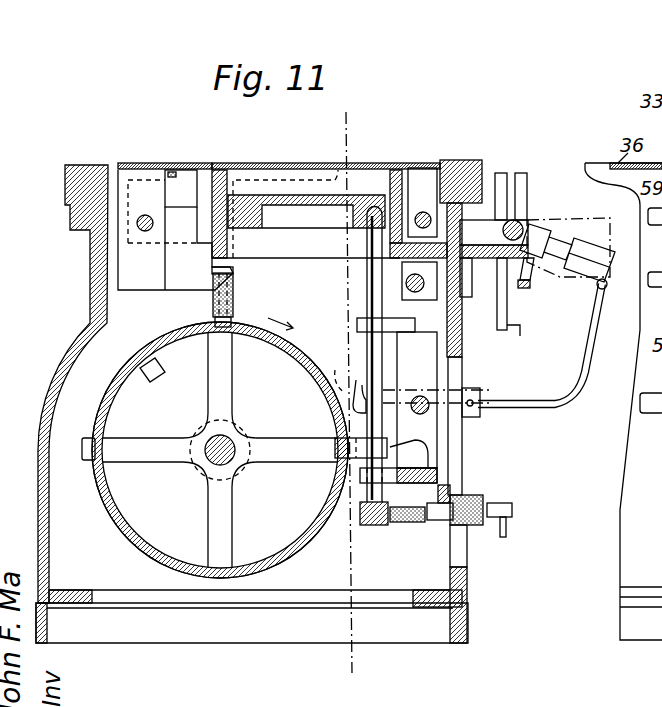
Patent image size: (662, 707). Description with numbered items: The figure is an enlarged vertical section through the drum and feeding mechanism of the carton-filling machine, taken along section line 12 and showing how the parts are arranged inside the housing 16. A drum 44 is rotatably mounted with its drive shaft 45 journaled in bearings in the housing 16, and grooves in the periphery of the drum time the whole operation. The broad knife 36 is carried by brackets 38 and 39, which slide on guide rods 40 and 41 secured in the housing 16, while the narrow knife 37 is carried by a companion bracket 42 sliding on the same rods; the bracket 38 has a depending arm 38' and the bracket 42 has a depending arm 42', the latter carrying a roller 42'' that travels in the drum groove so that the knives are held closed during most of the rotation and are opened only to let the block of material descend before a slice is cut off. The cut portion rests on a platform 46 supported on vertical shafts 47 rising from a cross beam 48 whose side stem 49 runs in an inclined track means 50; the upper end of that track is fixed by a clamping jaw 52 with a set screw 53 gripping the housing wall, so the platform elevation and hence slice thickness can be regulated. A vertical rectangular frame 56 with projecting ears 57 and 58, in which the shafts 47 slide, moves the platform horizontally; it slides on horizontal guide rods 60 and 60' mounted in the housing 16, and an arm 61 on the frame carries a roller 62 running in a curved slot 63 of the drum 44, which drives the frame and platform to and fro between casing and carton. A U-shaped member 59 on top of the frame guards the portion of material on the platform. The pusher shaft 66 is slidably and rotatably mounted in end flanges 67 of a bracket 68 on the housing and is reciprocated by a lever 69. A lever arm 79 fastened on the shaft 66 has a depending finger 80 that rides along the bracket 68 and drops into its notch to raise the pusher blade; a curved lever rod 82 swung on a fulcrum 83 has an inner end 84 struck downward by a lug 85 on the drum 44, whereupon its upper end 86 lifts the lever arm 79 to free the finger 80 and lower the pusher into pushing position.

The section line 12- 12 is at (345, 678).
The housing 16 is at (40, 420).
The broad knife 36 is at (385, 163).
The narrow knife 37 is at (180, 165).
The bracket 38 is at (181, 193).
The depending arm 38' is at (250, 270).
The bracket 39 is at (432, 170).
The guide rod 40 is at (137, 223).
The guide rod 41 is at (423, 212).
The bracket 42 is at (173, 246).
The depending arm 42' is at (196, 295).
The roller 42'' is at (188, 321).
The drum 44 is at (118, 525).
The drive shaft 45 is at (214, 458).
The supporting plate or platform 46 is at (332, 202).
The vertical shafts 47 is at (370, 298).
The cross beam 48 is at (362, 525).
The side stem 49 is at (415, 522).
The inclined track means 50 is at (440, 530).
The clamping jaw 52 is at (478, 495).
The set screw 53 is at (512, 510).
The vertical rectangular frame 56 is at (435, 385).
The projecting ear 57 is at (357, 326).
The projecting ear 58 is at (360, 470).
The U-shaped member 59 is at (222, 178).
The horizontal guide rod 60 is at (436, 391).
The horizontal guide rod 60' is at (417, 289).
The arm 61 is at (391, 446).
The roller 62 is at (348, 438).
The curved slot 63 is at (303, 365).
The shaft 66 is at (517, 224).
The end flanges 67 is at (487, 228).
The bracket 68 is at (492, 258).
The lever 69 is at (510, 332).
The lever arm 79 is at (600, 250).
The depending finger 80 is at (532, 280).
The curved lever rod 82 is at (563, 388).
The fulcrum 83 is at (478, 398).
The inner end 84 is at (357, 396).
The lug 85 is at (88, 437).
The upper end 86 is at (598, 279).